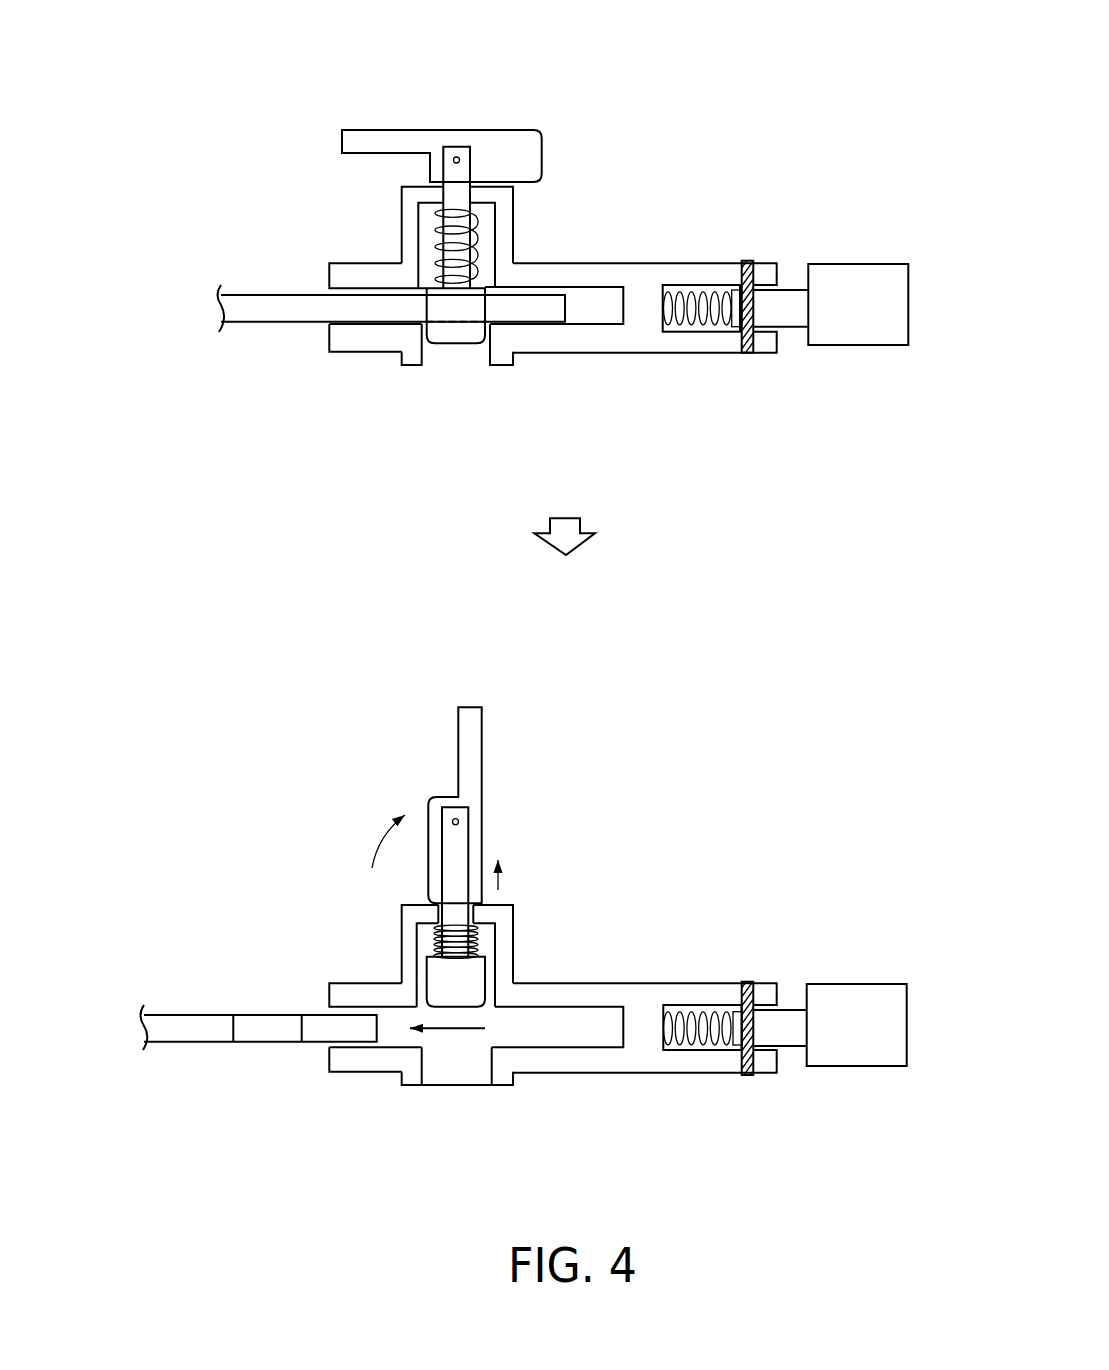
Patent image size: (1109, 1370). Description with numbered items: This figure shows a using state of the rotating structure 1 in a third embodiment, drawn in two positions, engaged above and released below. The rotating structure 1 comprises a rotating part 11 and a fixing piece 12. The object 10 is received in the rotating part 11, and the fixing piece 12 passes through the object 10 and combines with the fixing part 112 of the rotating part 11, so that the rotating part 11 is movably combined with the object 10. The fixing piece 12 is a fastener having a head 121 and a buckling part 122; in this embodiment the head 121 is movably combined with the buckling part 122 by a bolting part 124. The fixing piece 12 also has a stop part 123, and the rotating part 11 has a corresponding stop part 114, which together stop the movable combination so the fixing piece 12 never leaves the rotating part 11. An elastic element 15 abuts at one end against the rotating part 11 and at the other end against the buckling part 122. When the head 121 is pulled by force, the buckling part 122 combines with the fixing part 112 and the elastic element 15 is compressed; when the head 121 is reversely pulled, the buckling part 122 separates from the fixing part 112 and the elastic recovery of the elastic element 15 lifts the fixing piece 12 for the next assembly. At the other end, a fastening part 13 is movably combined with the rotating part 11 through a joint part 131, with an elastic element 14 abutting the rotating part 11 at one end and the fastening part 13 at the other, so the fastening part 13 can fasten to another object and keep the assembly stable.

The rotating structure 1 is at (747, 135).
The object 10 is at (542, 303).
The rotating part 11 is at (640, 263).
The fixing part 112 is at (413, 357).
The corresponding stop part 114 is at (487, 197).
The fixing piece 12 is at (523, 111).
The head 121 is at (532, 153).
The buckling part 122 is at (457, 337).
The stop part 123 is at (438, 285).
The bolting part 124 is at (455, 153).
The fastening part 13 is at (863, 275).
The joint part 131 is at (747, 353).
The elastic element 14 is at (697, 297).
The elastic element 15 is at (438, 228).